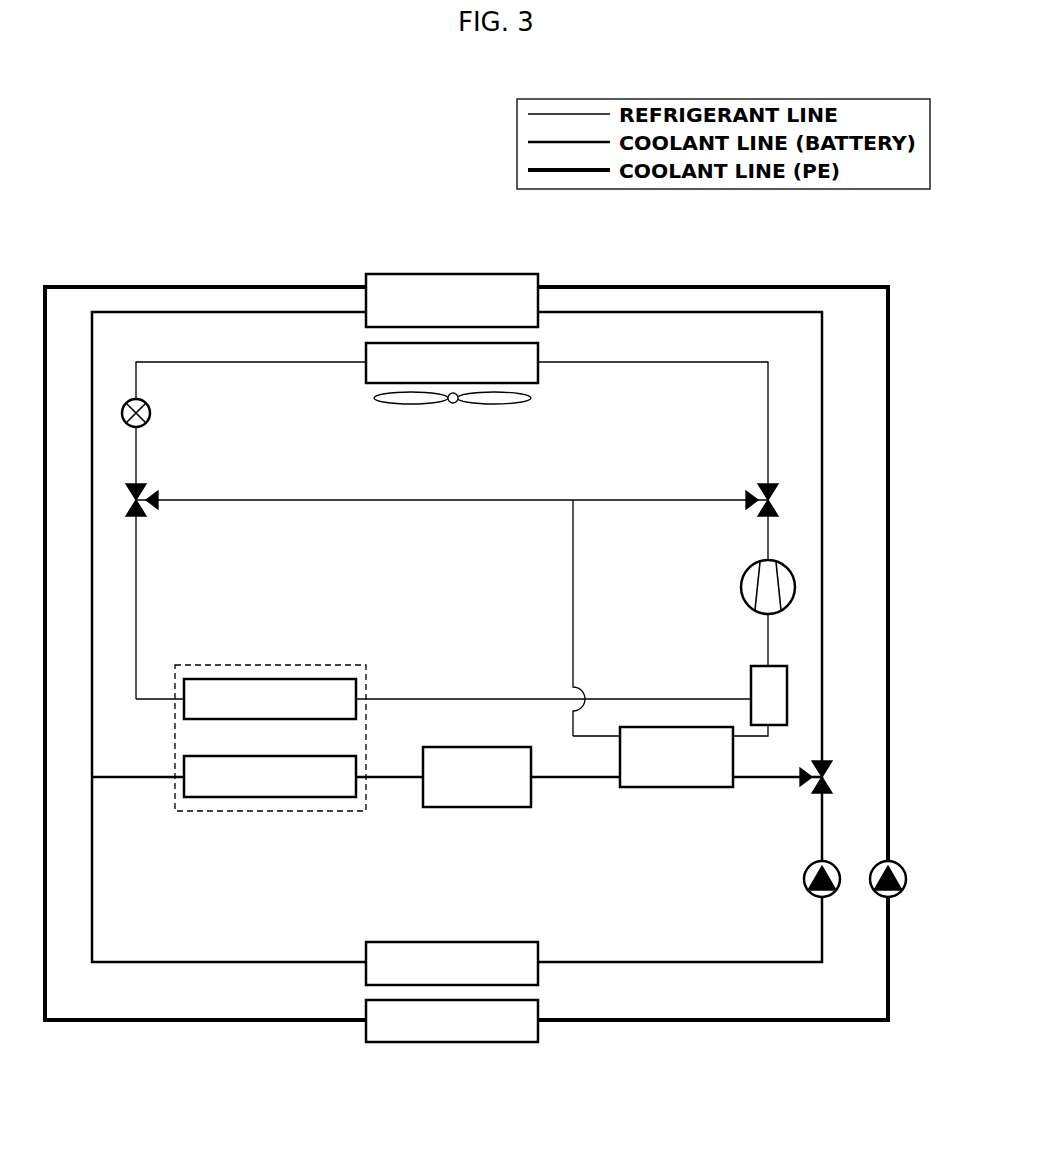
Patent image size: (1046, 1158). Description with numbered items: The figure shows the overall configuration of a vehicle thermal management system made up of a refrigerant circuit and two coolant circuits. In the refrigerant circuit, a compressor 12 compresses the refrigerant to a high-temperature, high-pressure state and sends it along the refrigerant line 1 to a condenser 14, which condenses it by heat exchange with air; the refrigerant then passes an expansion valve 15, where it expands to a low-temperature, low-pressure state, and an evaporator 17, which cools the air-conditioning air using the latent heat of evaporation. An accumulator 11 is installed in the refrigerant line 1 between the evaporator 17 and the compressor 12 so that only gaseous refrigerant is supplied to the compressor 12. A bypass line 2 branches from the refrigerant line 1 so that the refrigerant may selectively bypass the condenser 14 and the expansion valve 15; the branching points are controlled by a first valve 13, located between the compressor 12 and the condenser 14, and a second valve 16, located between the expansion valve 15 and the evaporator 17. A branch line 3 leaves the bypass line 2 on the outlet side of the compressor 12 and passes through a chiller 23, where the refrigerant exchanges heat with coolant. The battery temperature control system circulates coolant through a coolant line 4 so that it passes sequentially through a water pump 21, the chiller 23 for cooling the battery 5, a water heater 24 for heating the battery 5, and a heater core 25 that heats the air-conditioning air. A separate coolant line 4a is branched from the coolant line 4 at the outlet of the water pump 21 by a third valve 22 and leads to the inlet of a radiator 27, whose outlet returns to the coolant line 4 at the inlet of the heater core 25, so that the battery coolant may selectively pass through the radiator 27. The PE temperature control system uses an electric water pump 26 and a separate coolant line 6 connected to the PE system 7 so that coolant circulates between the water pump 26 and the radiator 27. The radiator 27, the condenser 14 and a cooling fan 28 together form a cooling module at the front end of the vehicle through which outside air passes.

The refrigerant line 1 is at (700, 362).
The bypass line 2 is at (656, 498).
The branch line 3 is at (573, 604).
The coolant line 4 is at (620, 962).
The branched coolant line 4a is at (823, 372).
The battery 5 is at (400, 942).
The separate coolant line 6 is at (622, 1020).
The PE system 7 is at (400, 1042).
The accumulator 11 is at (787, 692).
The compressor 12 is at (796, 583).
The 3-way valve (first valve) 13 is at (780, 505).
The condenser 14 is at (538, 372).
The expansion valve 15 is at (128, 402).
The 3-way valve (second valve) 16 is at (150, 497).
The evaporator 17 is at (342, 679).
The water pump 21 is at (806, 866).
The third valve 22 is at (832, 778).
The chiller 23 is at (663, 787).
The water heater 24 is at (470, 807).
The heater core 25 is at (262, 797).
The water pump (EWP) 26 is at (902, 866).
The radiator 27 is at (449, 274).
The cooling fan 28 is at (490, 405).